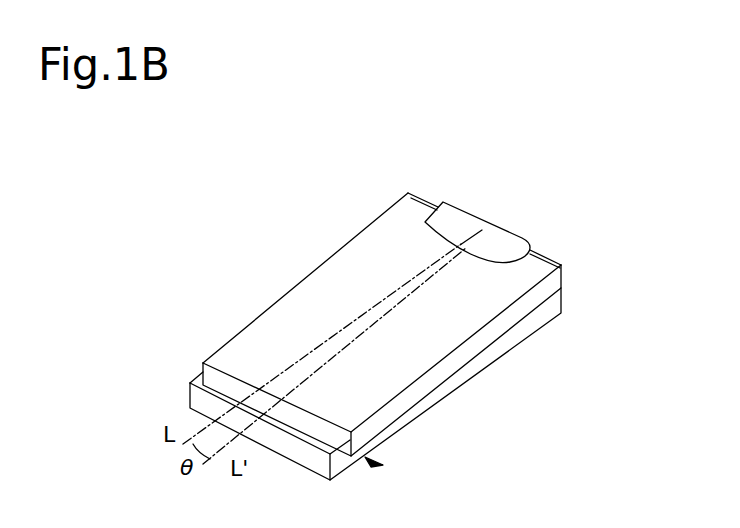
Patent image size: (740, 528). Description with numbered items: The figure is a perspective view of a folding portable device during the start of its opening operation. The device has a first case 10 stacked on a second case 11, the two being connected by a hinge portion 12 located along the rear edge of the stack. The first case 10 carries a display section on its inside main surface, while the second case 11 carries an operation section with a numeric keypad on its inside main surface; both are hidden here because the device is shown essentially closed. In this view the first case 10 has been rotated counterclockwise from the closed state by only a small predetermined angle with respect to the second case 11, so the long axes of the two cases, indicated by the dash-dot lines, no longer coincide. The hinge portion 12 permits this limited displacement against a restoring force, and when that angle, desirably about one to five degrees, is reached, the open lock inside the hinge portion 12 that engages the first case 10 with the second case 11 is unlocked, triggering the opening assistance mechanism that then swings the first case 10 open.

The first case 10 is at (252, 327).
The second case 11 is at (483, 362).
The hinge portion 12 is at (504, 226).